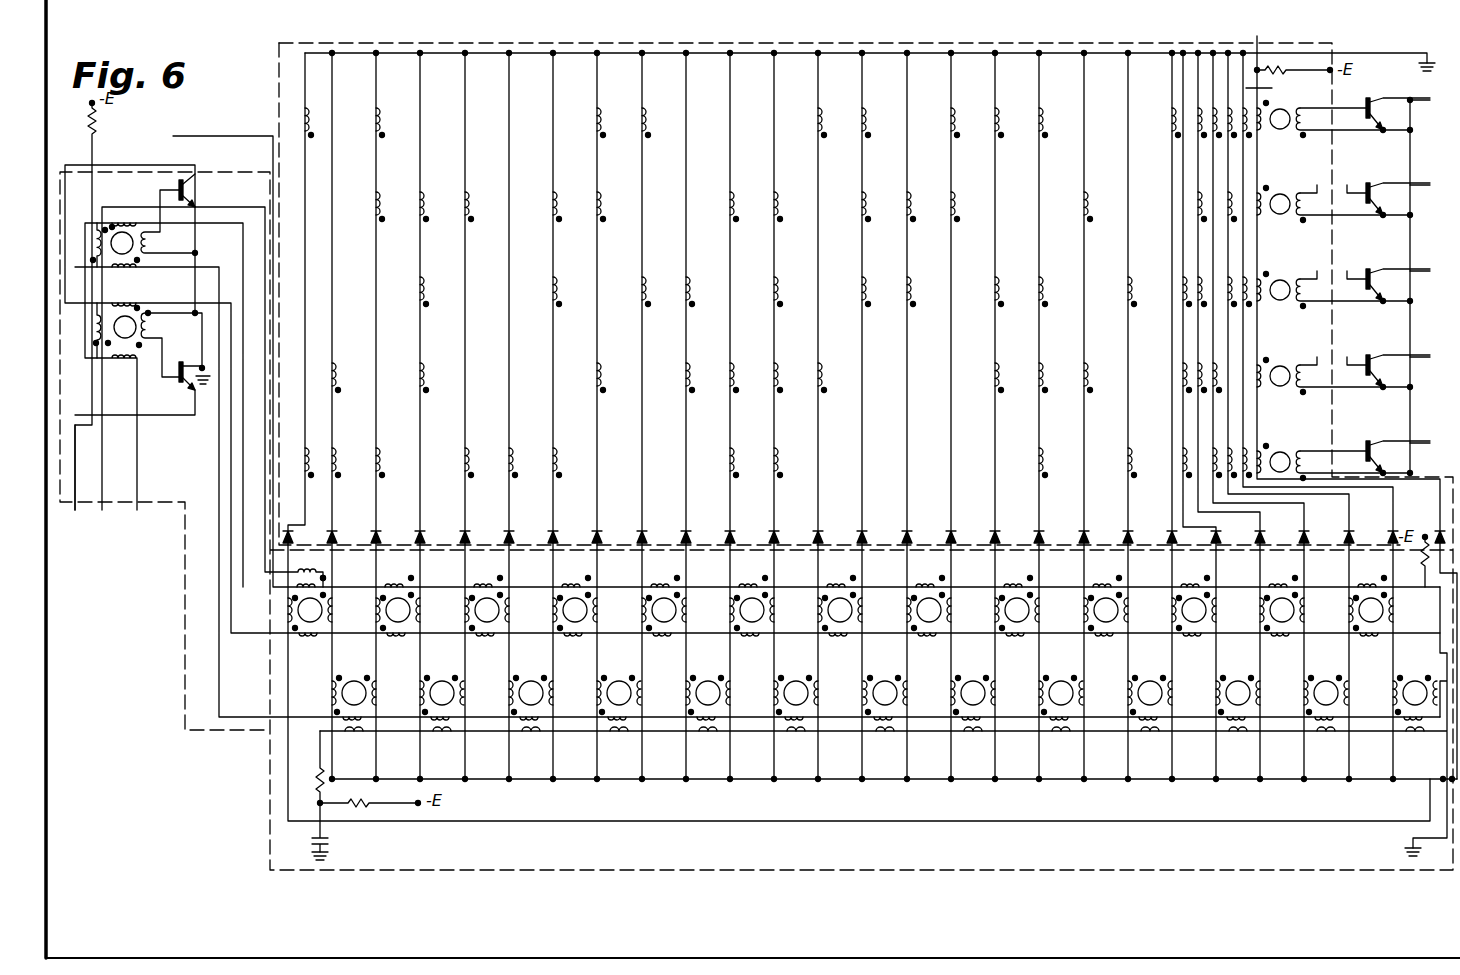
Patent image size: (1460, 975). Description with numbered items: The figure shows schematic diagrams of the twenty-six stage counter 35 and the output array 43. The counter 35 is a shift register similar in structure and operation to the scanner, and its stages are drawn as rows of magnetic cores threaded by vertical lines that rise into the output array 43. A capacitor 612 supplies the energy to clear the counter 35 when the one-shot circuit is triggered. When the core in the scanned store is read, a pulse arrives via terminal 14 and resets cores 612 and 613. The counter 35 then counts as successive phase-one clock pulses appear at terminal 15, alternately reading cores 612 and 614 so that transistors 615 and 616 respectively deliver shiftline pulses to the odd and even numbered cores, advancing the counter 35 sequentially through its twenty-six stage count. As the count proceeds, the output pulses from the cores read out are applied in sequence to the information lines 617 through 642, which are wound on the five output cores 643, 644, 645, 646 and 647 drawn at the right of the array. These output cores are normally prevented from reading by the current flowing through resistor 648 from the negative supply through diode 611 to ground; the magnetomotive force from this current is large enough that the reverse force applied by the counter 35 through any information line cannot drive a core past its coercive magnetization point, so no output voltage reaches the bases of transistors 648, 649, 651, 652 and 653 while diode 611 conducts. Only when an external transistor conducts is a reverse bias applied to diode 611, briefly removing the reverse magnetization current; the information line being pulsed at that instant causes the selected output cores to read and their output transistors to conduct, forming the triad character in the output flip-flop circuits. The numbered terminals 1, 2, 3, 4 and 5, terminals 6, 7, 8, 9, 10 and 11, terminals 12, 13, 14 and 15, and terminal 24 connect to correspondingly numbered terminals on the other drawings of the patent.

The terminal 1 is at (1430, 443).
The terminal 2 is at (1430, 357).
The terminal 3 is at (1430, 271).
The terminal 4 is at (1430, 185).
The terminal 5 is at (1430, 100).
The terminal 6 is at (1312, 180).
The terminal 7 is at (1352, 180).
The terminal 8 is at (1312, 266).
The terminal 9 is at (1352, 266).
The terminal 10 is at (1312, 352).
The terminal 11 is at (1352, 352).
The terminal 12 is at (1352, 398).
The terminal 13 is at (164, 405).
The terminal 14 is at (209, 397).
The terminal 15 is at (75, 476).
The terminal 24 is at (797, 357).
The twenty-six stage counter 35 is at (1352, 870).
The output array 43 is at (1138, 24).
The diode 611 is at (1427, 536).
The capacitor / core 612 is at (150, 205).
The core 613 is at (318, 603).
The core 614 is at (135, 316).
The transistor 615 is at (186, 182).
The transistor 616 is at (184, 364).
The information line 617 is at (305, 97).
The information line 642 is at (1276, 90).
The output core 643 is at (1277, 128).
The output core 644 is at (1295, 183).
The output core 645 is at (1295, 269).
The output core 646 is at (1295, 355).
The output core 647 is at (1295, 441).
The resistor / output transistor 648 is at (1290, 65).
The output transistor 649 is at (1386, 168).
The output transistor 651 is at (1386, 254).
The output transistor 652 is at (1386, 339).
The output transistor 653 is at (1386, 426).